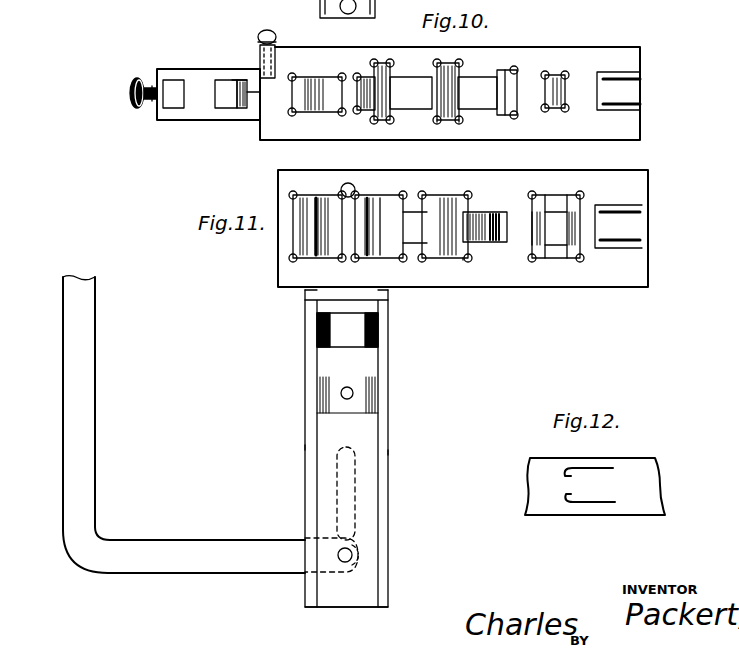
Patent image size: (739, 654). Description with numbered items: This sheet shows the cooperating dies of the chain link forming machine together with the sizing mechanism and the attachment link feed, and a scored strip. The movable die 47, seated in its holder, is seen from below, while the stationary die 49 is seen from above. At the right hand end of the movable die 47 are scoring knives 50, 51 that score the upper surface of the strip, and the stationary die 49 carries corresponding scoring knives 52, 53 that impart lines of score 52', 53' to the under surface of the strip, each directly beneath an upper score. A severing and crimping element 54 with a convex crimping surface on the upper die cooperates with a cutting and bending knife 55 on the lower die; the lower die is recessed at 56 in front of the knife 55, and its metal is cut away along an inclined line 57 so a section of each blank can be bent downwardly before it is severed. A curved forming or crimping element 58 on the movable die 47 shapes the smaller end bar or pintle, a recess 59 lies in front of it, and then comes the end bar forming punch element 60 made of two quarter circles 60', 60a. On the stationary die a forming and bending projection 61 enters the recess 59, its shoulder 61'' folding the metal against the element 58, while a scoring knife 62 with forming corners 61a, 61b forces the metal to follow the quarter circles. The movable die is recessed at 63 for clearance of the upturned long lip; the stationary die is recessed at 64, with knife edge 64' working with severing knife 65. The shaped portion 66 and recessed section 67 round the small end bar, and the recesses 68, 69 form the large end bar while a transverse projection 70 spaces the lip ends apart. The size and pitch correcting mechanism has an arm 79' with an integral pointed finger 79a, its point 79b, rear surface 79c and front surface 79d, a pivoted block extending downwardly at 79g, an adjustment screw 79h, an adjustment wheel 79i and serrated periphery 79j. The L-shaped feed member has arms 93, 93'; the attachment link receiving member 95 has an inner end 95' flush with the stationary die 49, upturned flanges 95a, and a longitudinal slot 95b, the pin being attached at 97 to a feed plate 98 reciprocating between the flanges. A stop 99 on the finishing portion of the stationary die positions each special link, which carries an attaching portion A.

In FIG. 10, the movable die 47 is at (553, 50).
In FIG. 11, the stationary die 49 is at (556, 287).
In FIG. 10, the scoring knife 50 is at (609, 77).
In FIG. 10, the scoring knife 51 is at (610, 107).
In FIG. 11, the scoring knife 52 is at (620, 257).
In FIG. 11, the scoring knife 53 is at (618, 216).
In FIG. 12, the line of score 52' is at (590, 518).
In FIG. 12, the line of score 53' is at (592, 456).
In FIG. 10, the severing and crimping element 54 is at (568, 91).
In FIG. 11, the cutting and bending knife 55 is at (566, 236).
In FIG. 11, the recess 56 is at (559, 213).
In FIG. 11, the inclined line 57 is at (535, 235).
In FIG. 10, the curved forming or crimping element 58 is at (510, 91).
In FIG. 10, the recess 59 is at (478, 82).
In FIG. 10, the end bar forming punch element 60 is at (458, 74).
In FIG. 10, the quarter circle 60a is at (440, 123).
In FIG. 10, the quarter circle 60' is at (472, 126).
In FIG. 11, the forming and bending projection 61 is at (487, 213).
In FIG. 11, the forming corner 61a is at (472, 252).
In FIG. 11, the forming corner 61b is at (460, 206).
In FIG. 11, the shoulder 61'' is at (514, 219).
In FIG. 11, the scoring knife 62 is at (442, 259).
In FIG. 10, the recess 63 is at (405, 86).
In FIG. 11, the recess 64 is at (379, 219).
In FIG. 11, the knife edge 64' is at (395, 237).
In FIG. 10, the cutting or severing knife 65 is at (381, 62).
In FIG. 10, the shaped portion 66 is at (360, 76).
In FIG. 11, the recessed section 67 is at (371, 259).
In FIG. 10, the recess 68 is at (318, 80).
In FIG. 11, the recess 69 is at (324, 259).
In FIG. 11, the projection 70 is at (308, 259).
In FIG. 10, the arm 79' is at (208, 79).
In FIG. 10, the finger 79a is at (240, 79).
In FIG. 10, the pointed end 79b is at (241, 110).
In FIG. 10, the rear surface 79c is at (261, 93).
In FIG. 10, the front surface 79d is at (228, 110).
In FIG. 10, the downward extension of block 79g is at (177, 110).
In FIG. 10, the adjustment screw 79h is at (150, 103).
In FIG. 10, the adjustment wheel 79i is at (150, 82).
In FIG. 10, the serrated periphery 79j is at (133, 97).
In FIG. 11, the arm of attachment link feed member 93 is at (184, 424).
In FIG. 11, the arm of attachment link feed member 93' is at (285, 570).
In FIG. 11, the attachment link receiving member 95 is at (359, 448).
In FIG. 11, the inner end 95' is at (365, 301).
In FIG. 11, the upturned flange 95a is at (305, 447).
In FIG. 11, the longitudinal slot 95b is at (345, 500).
In FIG. 11, the attachment 97 is at (350, 553).
In FIG. 11, the feed plate 98 is at (343, 608).
In FIG. 11, the stop 99 is at (352, 183).
In FIG. 11, the attaching portion A is at (330, 374).